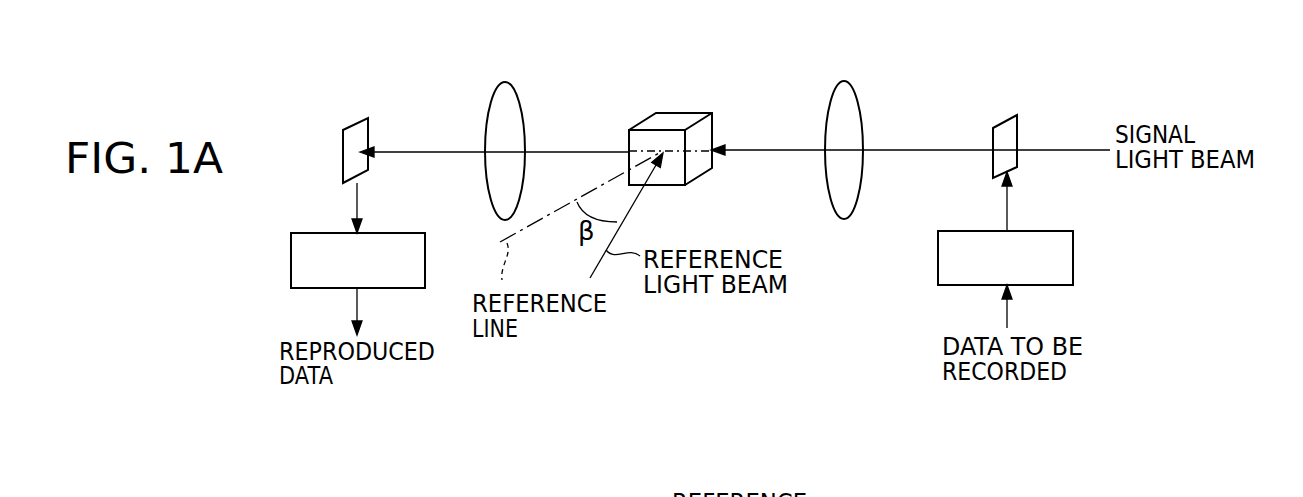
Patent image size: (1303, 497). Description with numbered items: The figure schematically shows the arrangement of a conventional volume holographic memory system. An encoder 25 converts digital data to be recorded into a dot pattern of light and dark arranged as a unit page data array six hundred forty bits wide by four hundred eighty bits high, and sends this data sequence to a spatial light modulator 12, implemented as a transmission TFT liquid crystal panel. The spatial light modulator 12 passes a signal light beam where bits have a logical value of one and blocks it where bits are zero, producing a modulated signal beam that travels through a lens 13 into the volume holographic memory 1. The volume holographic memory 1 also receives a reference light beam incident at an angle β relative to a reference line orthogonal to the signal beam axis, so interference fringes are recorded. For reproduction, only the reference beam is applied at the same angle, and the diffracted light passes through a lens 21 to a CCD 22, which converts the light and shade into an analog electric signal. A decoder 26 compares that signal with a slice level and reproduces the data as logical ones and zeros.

The volume holographic memory 1 is at (680, 113).
The spatial light modulator 12 is at (1000, 118).
The lens 13 is at (843, 80).
The lens 21 is at (505, 82).
The CCD 22 is at (352, 118).
The encoder 25 is at (1073, 257).
The decoder 26 is at (291, 262).